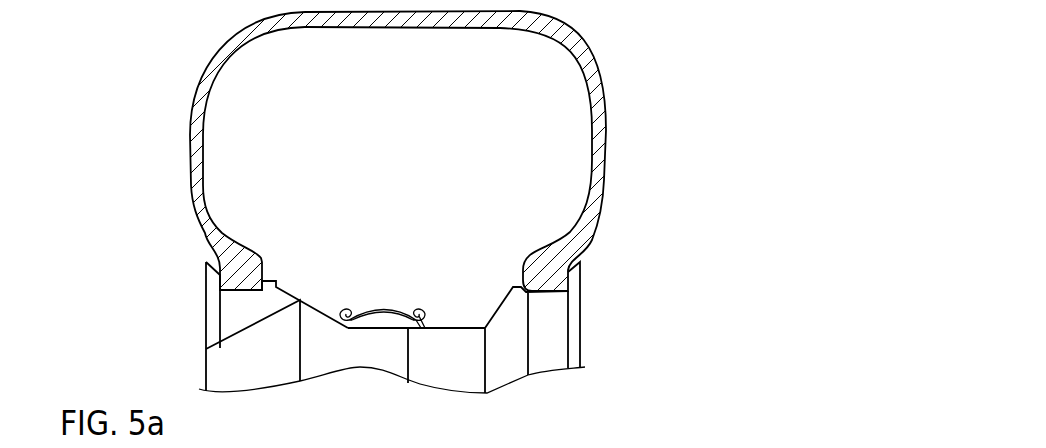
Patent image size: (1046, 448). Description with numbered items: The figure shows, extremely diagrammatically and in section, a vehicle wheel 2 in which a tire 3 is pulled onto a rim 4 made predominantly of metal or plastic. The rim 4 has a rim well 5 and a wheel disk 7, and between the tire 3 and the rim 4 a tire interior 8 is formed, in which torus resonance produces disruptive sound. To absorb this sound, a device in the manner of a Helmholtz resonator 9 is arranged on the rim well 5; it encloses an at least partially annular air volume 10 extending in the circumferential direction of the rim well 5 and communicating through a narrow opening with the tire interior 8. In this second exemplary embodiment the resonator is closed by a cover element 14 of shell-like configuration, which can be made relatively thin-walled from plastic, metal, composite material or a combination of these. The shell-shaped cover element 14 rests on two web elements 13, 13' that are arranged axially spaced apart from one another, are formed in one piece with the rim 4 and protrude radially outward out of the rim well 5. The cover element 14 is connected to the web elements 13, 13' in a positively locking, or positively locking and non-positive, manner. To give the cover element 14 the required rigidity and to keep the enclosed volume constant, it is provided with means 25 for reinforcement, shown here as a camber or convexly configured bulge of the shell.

The vehicle wheel 2 is at (647, 36).
The tire 3 is at (195, 145).
The rim 4 is at (405, 320).
The rim well 5 is at (470, 312).
The wheel disk 7 is at (225, 366).
The tire interior 8 is at (411, 118).
The Helmholtz resonator 9 is at (370, 265).
The air volume 10 is at (385, 326).
The web element 13 is at (427, 296).
The web element 13' is at (325, 292).
The cover element 14 is at (365, 313).
The means for reinforcement 25 is at (381, 292).